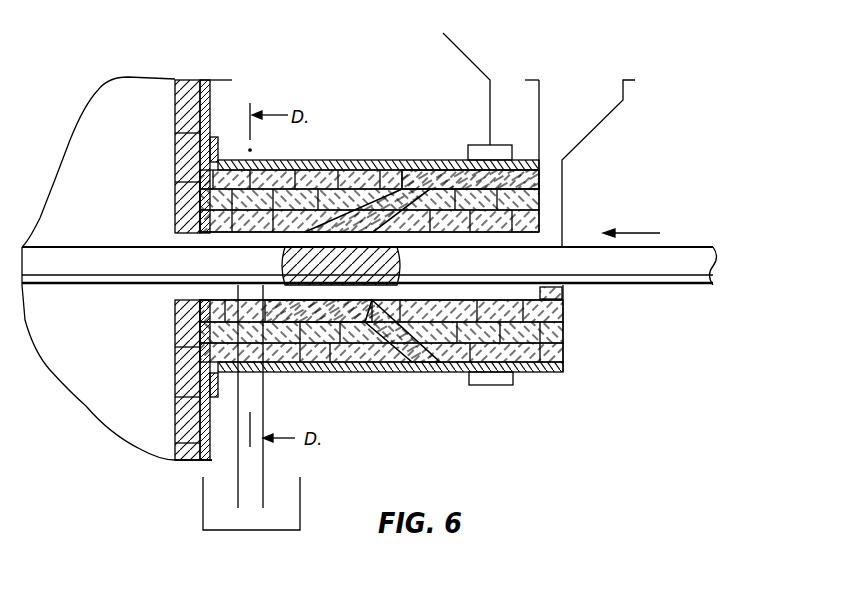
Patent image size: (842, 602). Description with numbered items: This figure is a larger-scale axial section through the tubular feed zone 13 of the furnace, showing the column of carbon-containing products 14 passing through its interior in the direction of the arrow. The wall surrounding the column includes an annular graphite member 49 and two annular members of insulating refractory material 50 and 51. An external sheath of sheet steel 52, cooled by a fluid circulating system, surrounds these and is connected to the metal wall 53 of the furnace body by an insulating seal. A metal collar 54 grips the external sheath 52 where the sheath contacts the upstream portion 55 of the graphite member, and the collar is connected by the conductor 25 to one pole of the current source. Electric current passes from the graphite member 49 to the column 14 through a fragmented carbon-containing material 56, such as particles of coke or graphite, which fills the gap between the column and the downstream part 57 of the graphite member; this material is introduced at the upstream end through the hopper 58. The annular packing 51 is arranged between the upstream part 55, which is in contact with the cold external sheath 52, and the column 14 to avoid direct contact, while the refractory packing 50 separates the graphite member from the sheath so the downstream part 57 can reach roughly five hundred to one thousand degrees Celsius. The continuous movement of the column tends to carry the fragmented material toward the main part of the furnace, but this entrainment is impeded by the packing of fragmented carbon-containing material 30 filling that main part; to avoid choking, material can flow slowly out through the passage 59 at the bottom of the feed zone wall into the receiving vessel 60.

The feed zone 13 is at (397, 380).
The column of carbon-containing products 14 is at (587, 270).
The conductor 25 is at (463, 52).
The packing of fragmented carbon-containing material 30 is at (92, 134).
The annular graphite member 49 is at (402, 192).
The annular member of insulating refractory material 50 is at (348, 192).
The annular packing of insulating refractory material 51 is at (445, 197).
The external sheath 52 is at (450, 374).
The metal wall 53 is at (208, 104).
The metal collar 54 is at (501, 153).
The upstream portion of the graphite member 55 is at (520, 182).
The fragmented carbon-containing material 56 is at (367, 290).
The downstream part of the graphite member 57 is at (300, 312).
The hopper 58 is at (600, 122).
The passage 59 is at (248, 388).
The receiving vessel 60 is at (302, 491).